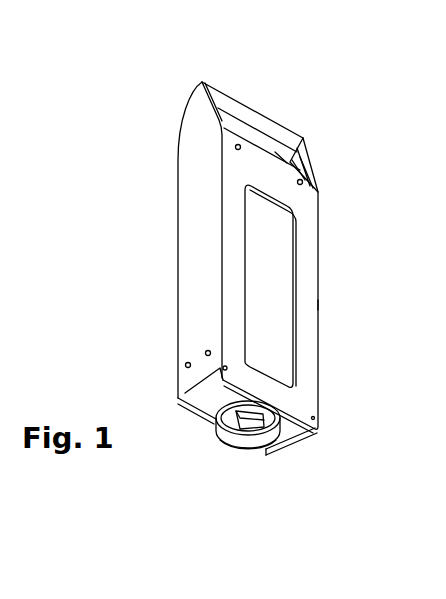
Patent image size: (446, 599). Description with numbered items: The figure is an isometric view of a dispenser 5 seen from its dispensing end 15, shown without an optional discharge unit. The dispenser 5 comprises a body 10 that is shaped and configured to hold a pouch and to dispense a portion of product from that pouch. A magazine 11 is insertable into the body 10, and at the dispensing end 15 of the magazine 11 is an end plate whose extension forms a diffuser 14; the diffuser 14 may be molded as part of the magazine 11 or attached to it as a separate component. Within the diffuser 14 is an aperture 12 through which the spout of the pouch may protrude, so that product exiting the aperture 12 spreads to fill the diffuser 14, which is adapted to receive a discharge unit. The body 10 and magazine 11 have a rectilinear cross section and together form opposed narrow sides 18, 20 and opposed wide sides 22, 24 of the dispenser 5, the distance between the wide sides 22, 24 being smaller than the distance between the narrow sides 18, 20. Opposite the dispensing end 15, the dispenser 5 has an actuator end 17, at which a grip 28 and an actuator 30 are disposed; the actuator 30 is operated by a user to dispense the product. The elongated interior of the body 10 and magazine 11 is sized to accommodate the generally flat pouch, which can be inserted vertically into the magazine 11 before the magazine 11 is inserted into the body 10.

The dispenser 5 is at (178, 60).
The body 10 is at (178, 210).
The magazine 11 is at (290, 428).
The aperture 12 is at (245, 422).
The diffuser 14 is at (230, 440).
The dispensing end 15 is at (244, 500).
The actuator end 17 is at (261, 78).
The narrow side 18 is at (197, 278).
The narrow side 20 is at (308, 307).
The wide side 22 is at (308, 362).
The wide side 24 is at (190, 325).
The grip 28 is at (292, 137).
The actuator 30 is at (317, 178).